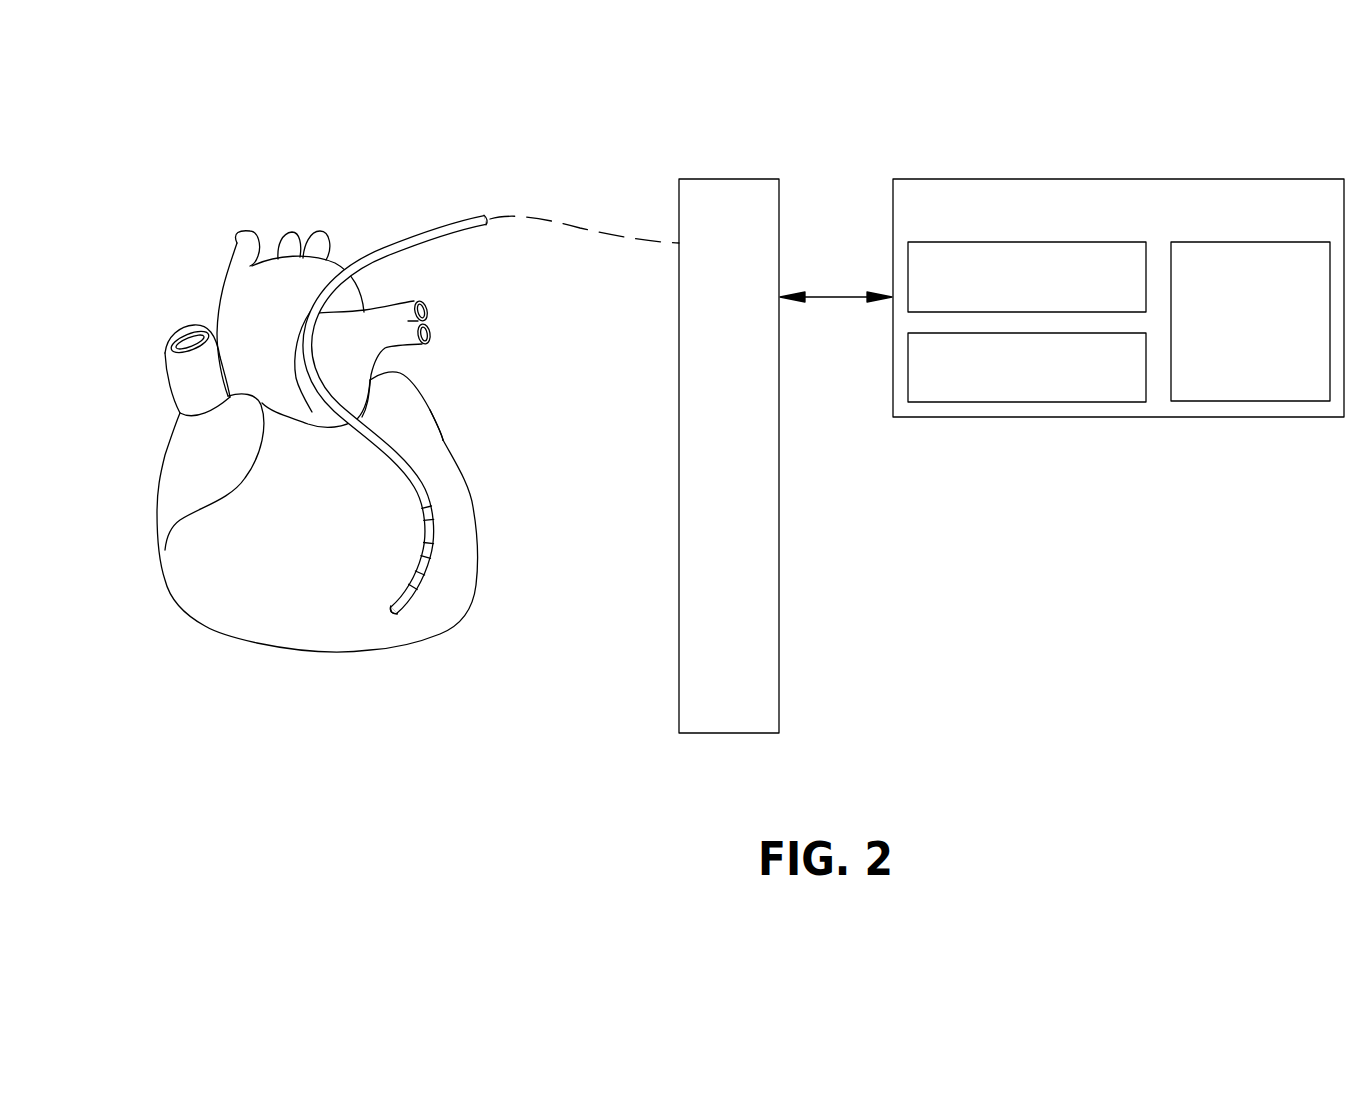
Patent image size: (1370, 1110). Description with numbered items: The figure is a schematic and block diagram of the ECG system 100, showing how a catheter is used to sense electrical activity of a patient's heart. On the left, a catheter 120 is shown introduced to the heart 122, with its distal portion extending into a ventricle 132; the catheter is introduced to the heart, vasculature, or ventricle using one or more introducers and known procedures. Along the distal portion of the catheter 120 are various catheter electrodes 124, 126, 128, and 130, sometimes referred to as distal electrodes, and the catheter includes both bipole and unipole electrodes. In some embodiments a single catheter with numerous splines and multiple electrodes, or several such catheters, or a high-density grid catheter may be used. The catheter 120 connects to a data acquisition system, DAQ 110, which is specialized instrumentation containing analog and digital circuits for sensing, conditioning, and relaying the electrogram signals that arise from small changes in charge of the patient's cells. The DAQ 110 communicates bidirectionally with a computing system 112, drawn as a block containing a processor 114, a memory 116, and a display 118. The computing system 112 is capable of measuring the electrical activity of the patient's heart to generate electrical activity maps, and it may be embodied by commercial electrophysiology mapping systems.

The ECG system 100 is at (889, 136).
The data acquisition system (DAQ) 110 is at (780, 616).
The computing system 112 is at (1085, 304).
The processor 114 is at (907, 263).
The memory 116 is at (1055, 402).
The display 118 is at (1228, 401).
The catheter 120 is at (493, 456).
The heart 122 is at (424, 400).
The catheter electrode 124 is at (433, 510).
The catheter electrode 126 is at (431, 553).
The catheter electrode 128 is at (421, 587).
The catheter electrode 130 is at (394, 613).
The ventricle 132 is at (345, 653).